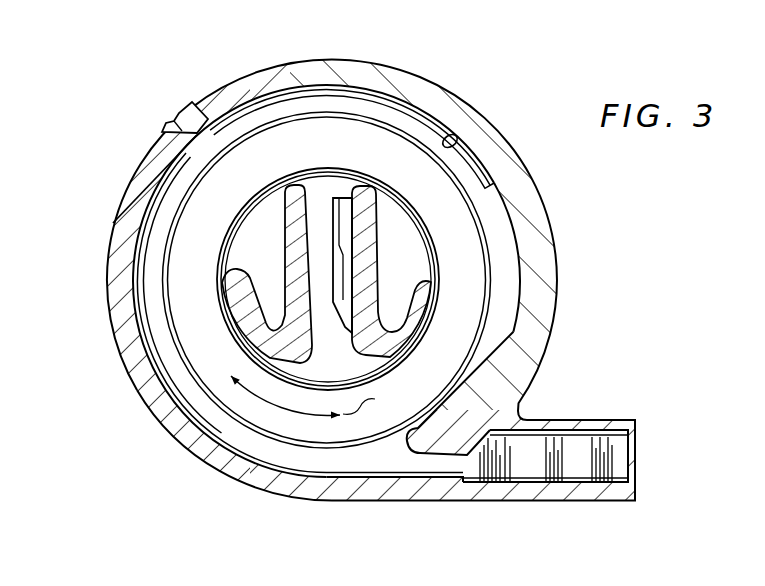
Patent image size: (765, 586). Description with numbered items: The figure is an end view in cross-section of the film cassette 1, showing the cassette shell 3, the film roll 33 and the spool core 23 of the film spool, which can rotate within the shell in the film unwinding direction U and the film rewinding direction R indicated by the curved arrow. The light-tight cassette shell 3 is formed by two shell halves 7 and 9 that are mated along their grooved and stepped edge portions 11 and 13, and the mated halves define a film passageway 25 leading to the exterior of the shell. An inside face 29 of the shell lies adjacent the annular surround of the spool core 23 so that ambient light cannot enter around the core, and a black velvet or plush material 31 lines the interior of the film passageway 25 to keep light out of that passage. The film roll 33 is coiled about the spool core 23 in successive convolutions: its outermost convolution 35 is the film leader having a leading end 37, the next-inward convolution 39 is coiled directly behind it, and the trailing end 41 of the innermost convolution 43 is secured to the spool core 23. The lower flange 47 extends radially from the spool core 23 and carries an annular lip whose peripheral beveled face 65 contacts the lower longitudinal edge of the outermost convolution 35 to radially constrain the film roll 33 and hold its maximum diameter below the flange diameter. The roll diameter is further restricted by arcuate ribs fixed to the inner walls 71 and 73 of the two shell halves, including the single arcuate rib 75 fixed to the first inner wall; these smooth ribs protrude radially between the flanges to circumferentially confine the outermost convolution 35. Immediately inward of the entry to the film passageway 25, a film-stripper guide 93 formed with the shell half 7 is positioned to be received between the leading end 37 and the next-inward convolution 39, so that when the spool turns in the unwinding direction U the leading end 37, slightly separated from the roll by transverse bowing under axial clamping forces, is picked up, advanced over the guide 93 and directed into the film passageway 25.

The film cassette 1 is at (176, 85).
The cassette shell 3 is at (232, 70).
The shell half 7 is at (277, 60).
The shell half 9 is at (114, 236).
The grooved and stepped edge portion 11 is at (183, 127).
The grooved and stepped edge portion 13 is at (181, 100).
The spool core 23 is at (400, 228).
The film passageway 25 is at (488, 448).
The inside face 29 is at (406, 468).
The black velvet or plush material 31 is at (514, 462).
The film roll 33 is at (397, 120).
The outermost convolution 35 is at (319, 104).
The leading end 37 is at (133, 262).
The next-inward convolution 39 is at (357, 112).
The trailing end 41 is at (345, 198).
The innermost convolution 43 is at (358, 188).
The lower flange 47 is at (190, 428).
The peripheral beveled face 65 is at (180, 375).
The inner wall 71 is at (458, 140).
The inner wall 73 is at (155, 330).
The arcuate rib 75 is at (492, 210).
The film-stripper guide 93 is at (427, 437).
The film rewinding direction R is at (228, 368).
The film unwinding direction U is at (367, 405).